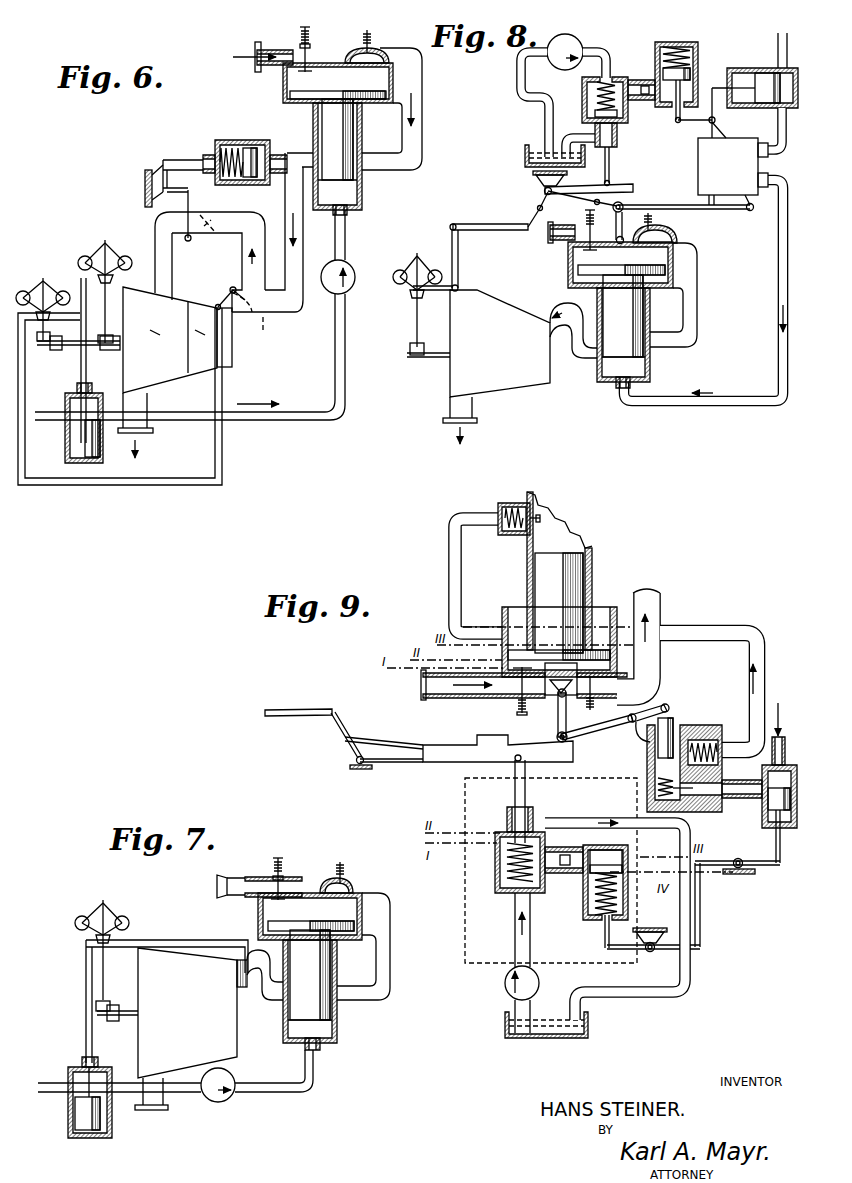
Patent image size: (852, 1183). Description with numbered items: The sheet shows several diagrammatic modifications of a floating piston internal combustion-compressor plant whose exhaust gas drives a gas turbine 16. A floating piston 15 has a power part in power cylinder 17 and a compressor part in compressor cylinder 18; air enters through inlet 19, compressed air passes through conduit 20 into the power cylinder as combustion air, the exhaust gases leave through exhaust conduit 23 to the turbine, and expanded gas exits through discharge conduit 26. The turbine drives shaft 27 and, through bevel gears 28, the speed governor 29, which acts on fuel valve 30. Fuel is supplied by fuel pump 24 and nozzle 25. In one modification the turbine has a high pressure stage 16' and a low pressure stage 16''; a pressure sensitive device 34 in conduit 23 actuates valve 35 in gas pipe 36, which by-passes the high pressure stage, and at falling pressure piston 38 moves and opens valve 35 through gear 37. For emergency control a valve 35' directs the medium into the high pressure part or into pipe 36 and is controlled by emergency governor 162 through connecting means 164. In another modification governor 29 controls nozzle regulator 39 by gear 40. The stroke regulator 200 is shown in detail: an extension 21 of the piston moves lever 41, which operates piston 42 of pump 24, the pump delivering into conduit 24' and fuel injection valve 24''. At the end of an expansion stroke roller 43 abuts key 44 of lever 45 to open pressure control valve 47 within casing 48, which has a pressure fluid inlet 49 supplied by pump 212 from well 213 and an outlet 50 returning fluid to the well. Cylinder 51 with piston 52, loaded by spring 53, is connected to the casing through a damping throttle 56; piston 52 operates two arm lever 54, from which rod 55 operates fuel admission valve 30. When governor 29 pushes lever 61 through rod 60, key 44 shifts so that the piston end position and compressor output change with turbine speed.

In FIG. 6, the floating piston 15 is at (333, 132).
In FIG. 8, the floating piston 15 is at (634, 308).
In FIG. 9, the floating piston 15 is at (543, 581).
In FIG. 7, the floating piston 15 is at (317, 971).
In FIG. 6, the gas turbine 16 is at (177, 333).
In FIG. 8, the gas turbine 16 is at (500, 335).
In FIG. 7, the gas turbine 16 is at (187, 1013).
In FIG. 6, the high pressure stage 16' is at (206, 341).
In FIG. 6, the low pressure stage 16'' is at (161, 341).
In FIG. 6, the power cylinder 17 is at (350, 197).
In FIG. 8, the power cylinder 17 is at (641, 372).
In FIG. 7, the power cylinder 17 is at (321, 1028).
In FIG. 6, the compressor cylinder 18 is at (335, 72).
In FIG. 8, the compressor cylinder 18 is at (620, 265).
In FIG. 7, the compressor cylinder 18 is at (308, 897).
In FIG. 7, the inlet 19 is at (216, 881).
In FIG. 6, the conduit 20 is at (423, 112).
In FIG. 8, the conduit 20 is at (699, 268).
In FIG. 7, the conduit 20 is at (391, 945).
In FIG. 9, the extension 21 is at (559, 686).
In FIG. 6, the exhaust conduit 23 is at (288, 200).
In FIG. 7, the exhaust conduit 23 is at (276, 998).
In FIG. 6, the fuel pump 24 is at (207, 315).
In FIG. 8, the fuel pump 24 is at (703, 269).
In FIG. 9, the fuel pump 24 is at (704, 782).
In FIG. 7, the fuel pump 24 is at (175, 1092).
In FIG. 9, the conduit 24' is at (687, 669).
In FIG. 9, the fuel injection valve 24'' is at (497, 555).
In FIG. 8, the nozzle 25 is at (619, 388).
In FIG. 7, the nozzle 25 is at (323, 1052).
In FIG. 6, the discharge conduit 26 is at (143, 402).
In FIG. 7, the discharge conduit 26 is at (153, 1108).
In FIG. 6, the shaft 27 is at (50, 351).
In FIG. 6, the bevel gears 28 is at (58, 340).
In FIG. 7, the bevel gears 28 is at (115, 1023).
In FIG. 6, the speed governor 29 is at (105, 245).
In FIG. 8, the speed governor 29 is at (417, 252).
In FIG. 7, the speed governor 29 is at (100, 908).
In FIG. 6, the fuel valve 30 is at (78, 425).
In FIG. 8, the fuel valve 30 is at (762, 78).
In FIG. 9, the fuel valve 30 is at (775, 808).
In FIG. 7, the fuel valve 30 is at (80, 1116).
In FIG. 6, the pressure sensitive device 34 is at (215, 147).
In FIG. 6, the valve 35 is at (203, 215).
In FIG. 6, the valve 35' is at (246, 321).
In FIG. 6, the gas pipe 36 is at (241, 253).
In FIG. 6, the gear 37 is at (162, 164).
In FIG. 6, the piston 38 is at (247, 143).
In FIG. 7, the nozzle regulator 39 is at (242, 990).
In FIG. 7, the gear 40 is at (160, 940).
In FIG. 9, the lever 41 is at (643, 712).
In FIG. 9, the piston 42 is at (656, 742).
In FIG. 8, the roller 43 is at (630, 204).
In FIG. 9, the roller 43 is at (570, 742).
In FIG. 8, the key 44 is at (614, 190).
In FIG. 9, the key 44 is at (527, 741).
In FIG. 8, the lever 45 is at (575, 190).
In FIG. 9, the lever 45 is at (402, 765).
In FIG. 8, the pressure control valve 47 is at (597, 95).
In FIG. 9, the pressure control valve 47 is at (507, 834).
In FIG. 8, the casing 48 is at (630, 113).
In FIG. 9, the casing 48 is at (503, 882).
In FIG. 9, the pressure fluid inlet 49 is at (516, 902).
In FIG. 9, the pressure fluid outlet 50 is at (560, 821).
In FIG. 8, the cylinder 51 is at (680, 46).
In FIG. 9, the cylinder 51 is at (620, 853).
In FIG. 8, the piston 52 is at (693, 72).
In FIG. 9, the piston 52 is at (595, 869).
In FIG. 9, the spring 53 is at (597, 910).
In FIG. 9, the two arm lever 54 is at (665, 951).
In FIG. 9, the rod 55 is at (702, 908).
In FIG. 8, the damping throttle 56 is at (639, 82).
In FIG. 9, the damping throttle 56 is at (564, 852).
In FIG. 8, the rod 60 is at (482, 224).
In FIG. 9, the rod 60 is at (297, 704).
In FIG. 8, the lever 61 is at (536, 215).
In FIG. 9, the lever 61 is at (346, 745).
In FIG. 6, the emergency governor 162 is at (43, 280).
In FIG. 6, the connecting means 164 is at (167, 483).
In FIG. 8, the stroke regulator 200 is at (627, 40).
In FIG. 9, the stroke regulator 200 is at (466, 876).
In FIG. 8, the pump 212 is at (572, 39).
In FIG. 9, the pump 212 is at (505, 983).
In FIG. 9, the well 213 is at (506, 1023).